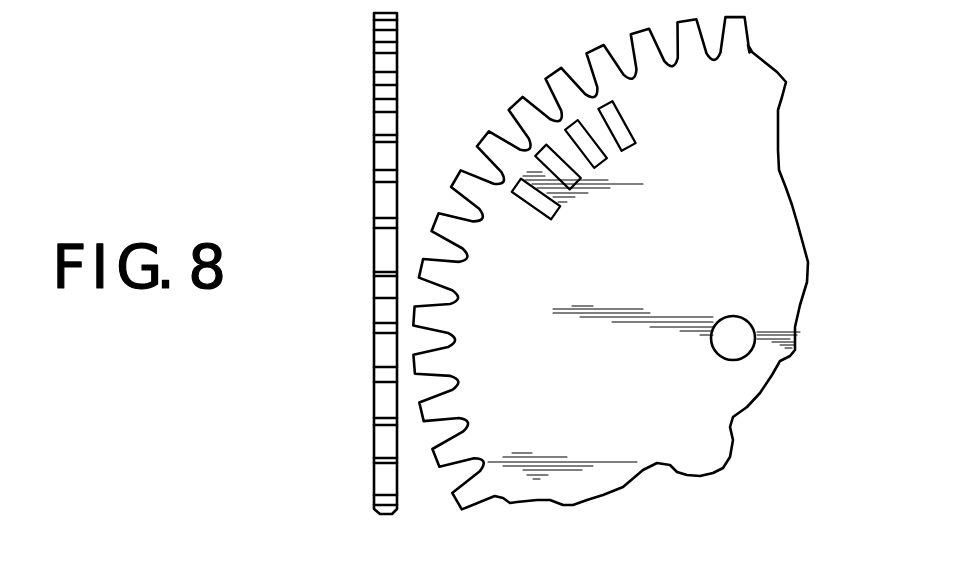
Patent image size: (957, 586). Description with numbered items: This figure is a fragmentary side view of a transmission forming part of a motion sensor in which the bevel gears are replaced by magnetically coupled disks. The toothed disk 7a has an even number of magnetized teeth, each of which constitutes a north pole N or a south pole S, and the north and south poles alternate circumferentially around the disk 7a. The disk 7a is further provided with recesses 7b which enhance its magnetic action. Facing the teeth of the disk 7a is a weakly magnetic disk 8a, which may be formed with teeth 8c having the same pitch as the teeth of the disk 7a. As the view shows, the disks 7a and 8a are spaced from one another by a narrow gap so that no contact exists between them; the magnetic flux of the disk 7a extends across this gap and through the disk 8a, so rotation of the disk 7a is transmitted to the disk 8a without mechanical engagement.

The toothed disk 7a is at (698, 460).
The recesses 7b is at (624, 132).
The weakly magnetic disk 8a is at (374, 85).
The teeth 8c is at (393, 230).